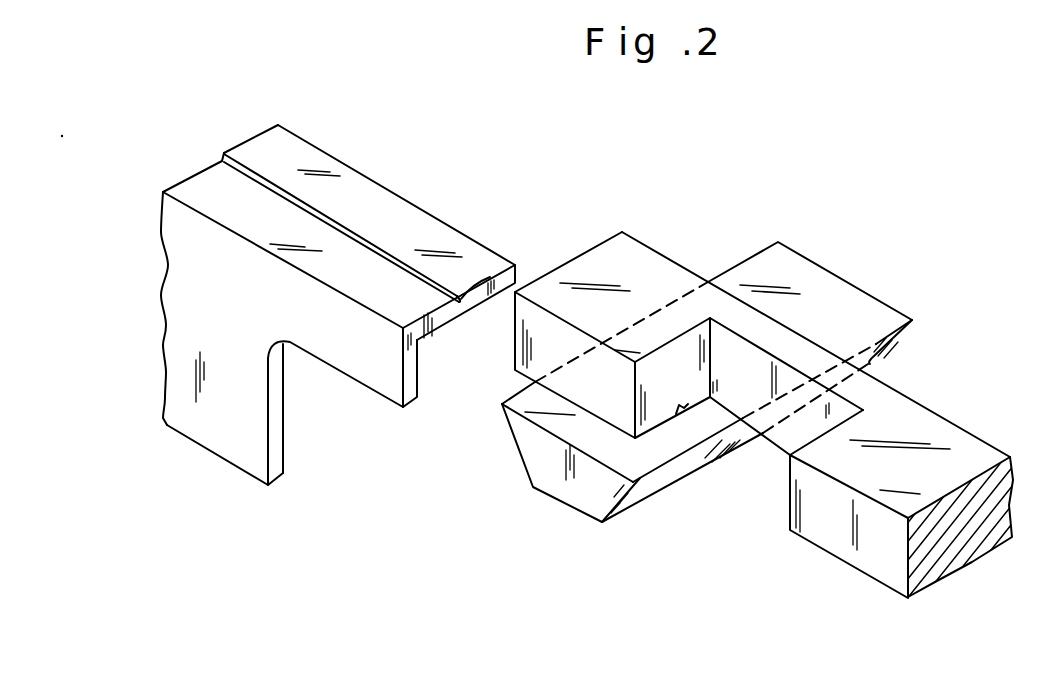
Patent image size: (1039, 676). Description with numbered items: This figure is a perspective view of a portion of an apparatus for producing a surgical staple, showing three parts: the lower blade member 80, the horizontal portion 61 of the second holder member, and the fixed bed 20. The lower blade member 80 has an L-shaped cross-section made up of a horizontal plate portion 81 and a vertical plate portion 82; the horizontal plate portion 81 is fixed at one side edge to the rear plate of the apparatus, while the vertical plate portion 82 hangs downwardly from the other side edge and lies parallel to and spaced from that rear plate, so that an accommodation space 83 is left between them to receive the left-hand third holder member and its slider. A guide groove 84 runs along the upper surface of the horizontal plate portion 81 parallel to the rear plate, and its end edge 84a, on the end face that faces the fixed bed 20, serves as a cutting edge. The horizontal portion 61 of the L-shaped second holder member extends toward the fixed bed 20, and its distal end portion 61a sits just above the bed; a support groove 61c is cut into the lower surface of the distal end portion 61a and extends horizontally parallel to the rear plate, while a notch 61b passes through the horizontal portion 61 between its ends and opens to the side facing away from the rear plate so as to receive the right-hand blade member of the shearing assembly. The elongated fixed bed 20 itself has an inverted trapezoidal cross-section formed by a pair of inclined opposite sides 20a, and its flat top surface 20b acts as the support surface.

The lower blade member 80 is at (350, 285).
The horizontal plate portion 81 is at (425, 237).
The vertical plate portion 82 is at (230, 418).
The accommodation space 83 is at (438, 355).
The guide groove 84 is at (334, 221).
The end edge of the guide groove 84a is at (480, 280).
The horizontal portion 61 is at (777, 409).
The distal end portion 61a is at (644, 272).
The notch 61b is at (746, 363).
The support groove 61c is at (684, 412).
The fixed bed 20 is at (685, 411).
The inclined opposite sides 20a is at (515, 446).
The top surface 20b is at (587, 438).